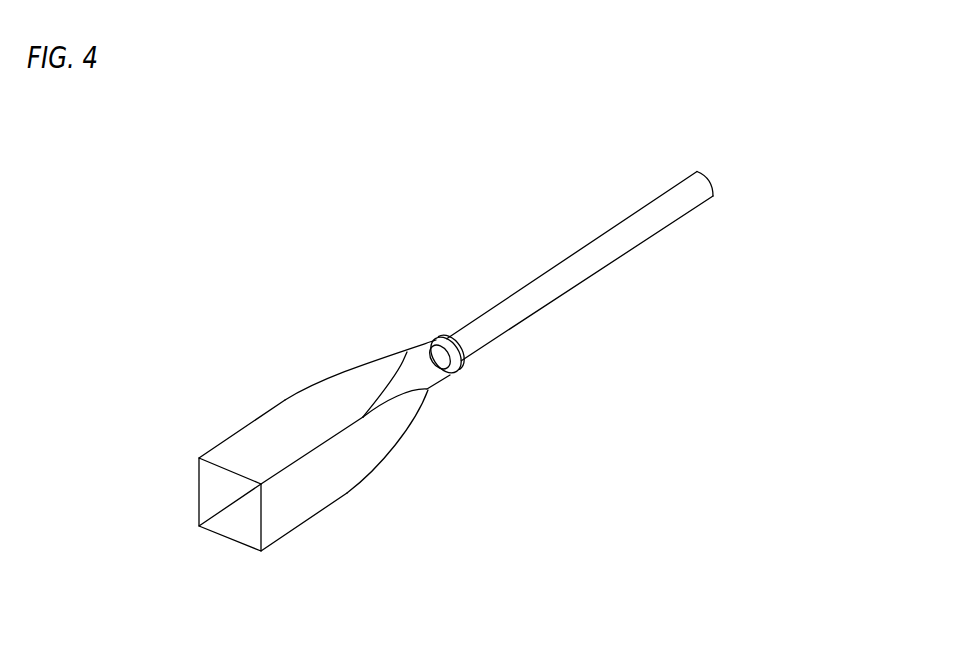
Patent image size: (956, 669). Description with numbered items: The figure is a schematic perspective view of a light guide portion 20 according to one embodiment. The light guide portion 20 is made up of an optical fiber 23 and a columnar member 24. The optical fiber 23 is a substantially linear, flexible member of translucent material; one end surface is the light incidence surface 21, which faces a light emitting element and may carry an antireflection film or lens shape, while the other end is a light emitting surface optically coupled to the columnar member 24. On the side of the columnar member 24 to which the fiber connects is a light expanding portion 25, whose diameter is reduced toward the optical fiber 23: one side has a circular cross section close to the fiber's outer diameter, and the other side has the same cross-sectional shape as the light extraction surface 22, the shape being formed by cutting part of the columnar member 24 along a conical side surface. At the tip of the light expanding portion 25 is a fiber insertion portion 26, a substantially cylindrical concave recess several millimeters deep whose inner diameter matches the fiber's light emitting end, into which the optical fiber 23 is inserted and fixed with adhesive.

The light guide portion 20 is at (455, 634).
The light incidence surface 21 is at (710, 178).
The light extraction surface 22 is at (237, 520).
The optical fiber 23 is at (607, 247).
The columnar member 24 is at (260, 442).
The light expanding portion 25 is at (405, 350).
The fiber insertion portion 26 is at (467, 362).